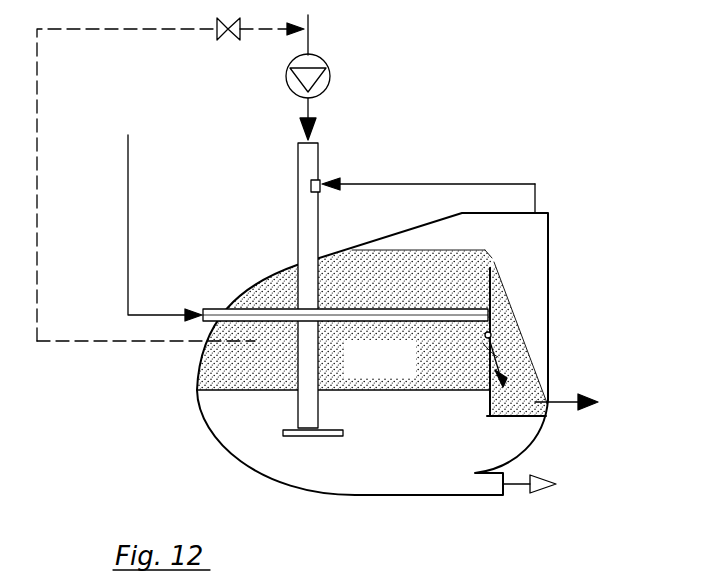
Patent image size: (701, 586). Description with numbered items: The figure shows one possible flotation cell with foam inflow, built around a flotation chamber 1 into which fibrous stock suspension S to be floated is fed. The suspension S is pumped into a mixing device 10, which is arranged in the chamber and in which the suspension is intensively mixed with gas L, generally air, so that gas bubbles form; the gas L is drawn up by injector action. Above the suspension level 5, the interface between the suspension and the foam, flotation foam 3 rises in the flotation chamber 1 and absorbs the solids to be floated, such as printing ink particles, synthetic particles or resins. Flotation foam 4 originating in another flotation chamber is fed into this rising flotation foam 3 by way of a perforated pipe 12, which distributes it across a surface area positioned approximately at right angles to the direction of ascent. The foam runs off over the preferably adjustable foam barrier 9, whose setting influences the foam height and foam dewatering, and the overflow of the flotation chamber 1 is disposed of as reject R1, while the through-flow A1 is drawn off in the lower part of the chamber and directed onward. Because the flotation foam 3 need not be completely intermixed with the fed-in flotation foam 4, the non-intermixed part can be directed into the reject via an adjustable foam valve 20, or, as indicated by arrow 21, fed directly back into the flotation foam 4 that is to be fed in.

The flotation chamber 1 is at (350, 478).
The flotation foam 3 is at (372, 333).
The flotation foam 4 is at (127, 178).
The suspension level 5 is at (385, 392).
The foam barrier 9 is at (495, 300).
The mixing device 10 is at (305, 160).
The perforated pipe 12 is at (228, 312).
The adjustable foam valve 20 is at (497, 350).
The arrow 21 is at (125, 345).
The fibrous stock suspension S is at (310, 42).
The gas L is at (420, 182).
The reject R1 is at (598, 398).
The through-flow A1 is at (548, 492).